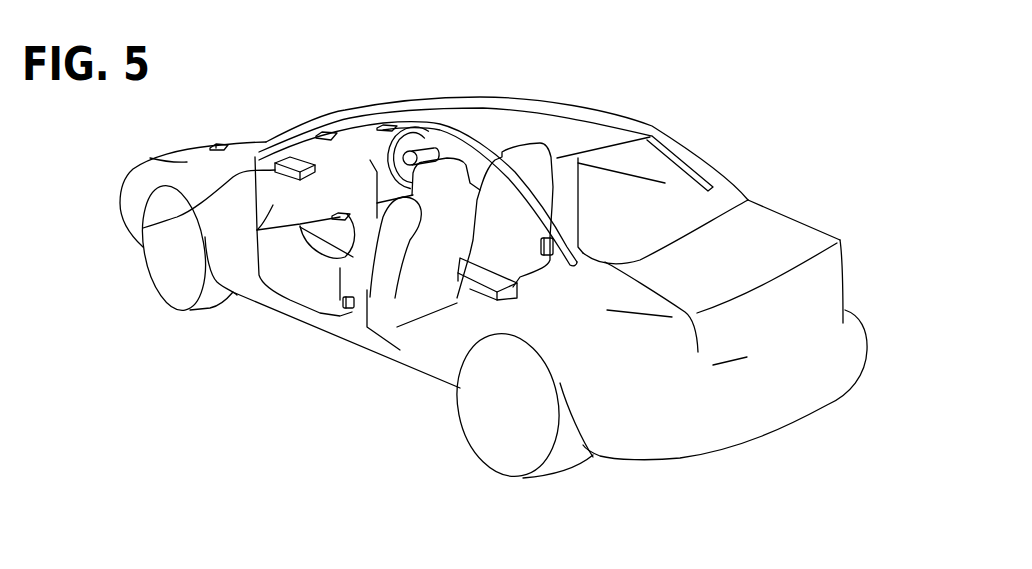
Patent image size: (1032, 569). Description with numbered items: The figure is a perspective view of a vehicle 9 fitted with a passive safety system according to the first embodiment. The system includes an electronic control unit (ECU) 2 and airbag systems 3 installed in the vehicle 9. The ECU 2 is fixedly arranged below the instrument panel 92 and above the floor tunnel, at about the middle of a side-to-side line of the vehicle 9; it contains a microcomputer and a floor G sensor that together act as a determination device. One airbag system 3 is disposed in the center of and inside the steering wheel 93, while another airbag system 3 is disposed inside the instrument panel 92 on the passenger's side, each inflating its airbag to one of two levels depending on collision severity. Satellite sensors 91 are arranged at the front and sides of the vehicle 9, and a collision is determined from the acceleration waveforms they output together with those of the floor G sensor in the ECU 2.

The vehicle 9 is at (710, 72).
The satellite sensor 91 is at (332, 130).
The instrument panel 92 is at (347, 212).
The steering wheel 93 is at (415, 120).
The airbag system 3 is at (143, 228).
The electronic control unit (ECU) 2 is at (353, 254).